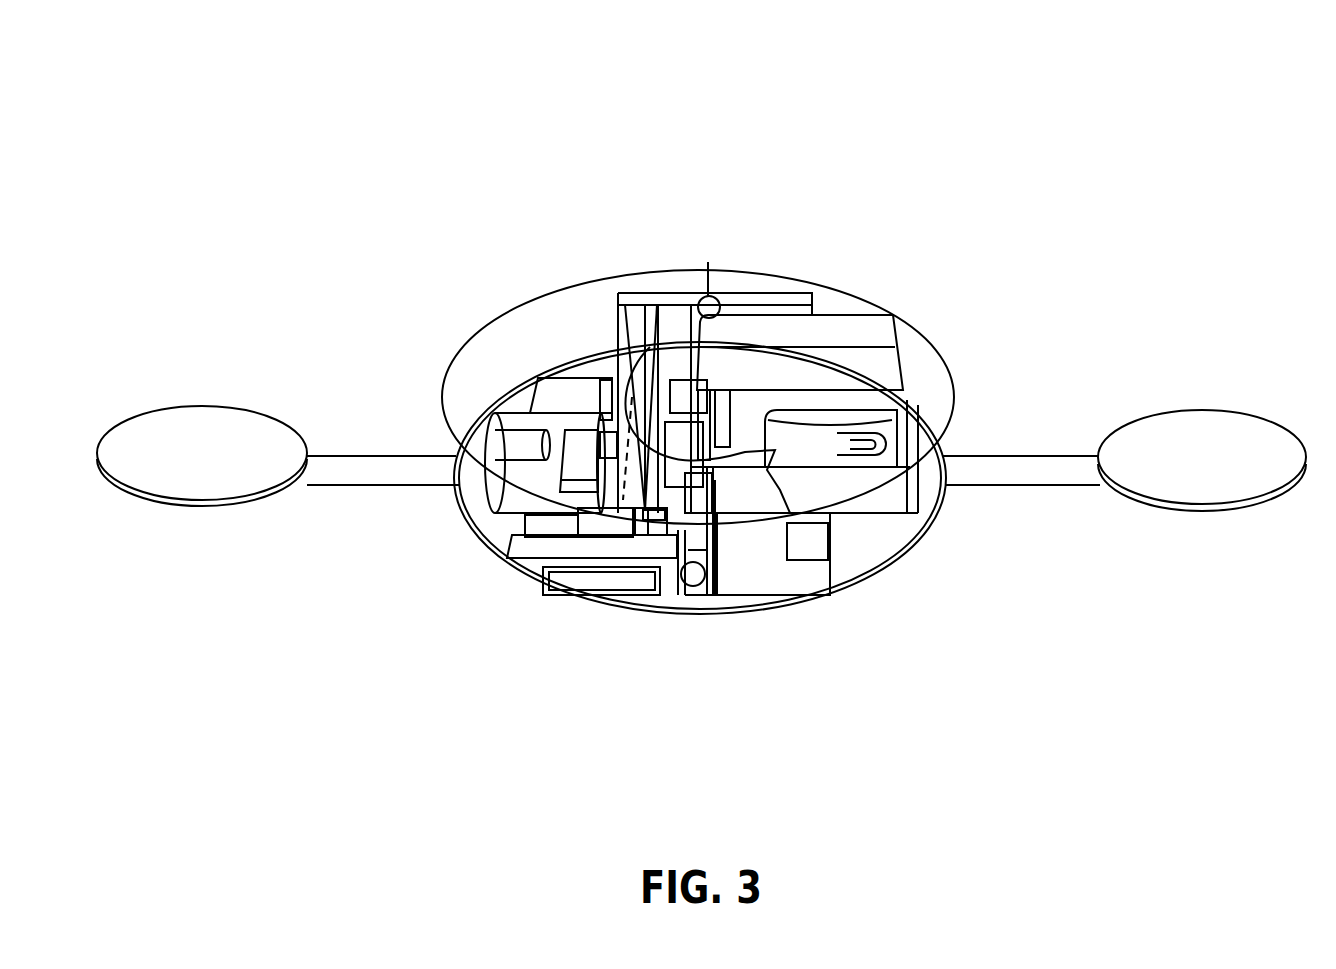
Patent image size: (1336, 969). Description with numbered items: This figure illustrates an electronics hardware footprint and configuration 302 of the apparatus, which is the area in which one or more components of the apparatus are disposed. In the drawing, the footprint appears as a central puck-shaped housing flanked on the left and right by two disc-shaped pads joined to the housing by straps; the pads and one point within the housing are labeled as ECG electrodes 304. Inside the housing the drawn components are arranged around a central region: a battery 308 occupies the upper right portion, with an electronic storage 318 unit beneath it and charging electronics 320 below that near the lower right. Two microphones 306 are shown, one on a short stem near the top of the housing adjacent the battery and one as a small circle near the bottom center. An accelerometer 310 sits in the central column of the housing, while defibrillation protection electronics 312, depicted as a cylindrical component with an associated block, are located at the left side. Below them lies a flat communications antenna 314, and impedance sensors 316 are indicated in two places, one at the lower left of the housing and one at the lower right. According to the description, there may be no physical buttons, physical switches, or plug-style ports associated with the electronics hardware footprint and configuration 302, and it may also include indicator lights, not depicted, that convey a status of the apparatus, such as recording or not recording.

The electronics hardware footprint and configuration 302 is at (1207, 105).
The ECG electrodes 304 is at (701, 301).
The microphones 306 is at (876, 484).
The battery 308 is at (888, 341).
The accelerometer 310 is at (551, 335).
The defibrillation protection electronics 312 is at (414, 474).
The communications antenna 314 is at (406, 543).
The impedance sensors 316 is at (853, 635).
The electronic storage 318 is at (976, 497).
The charging electronics 320 is at (803, 540).